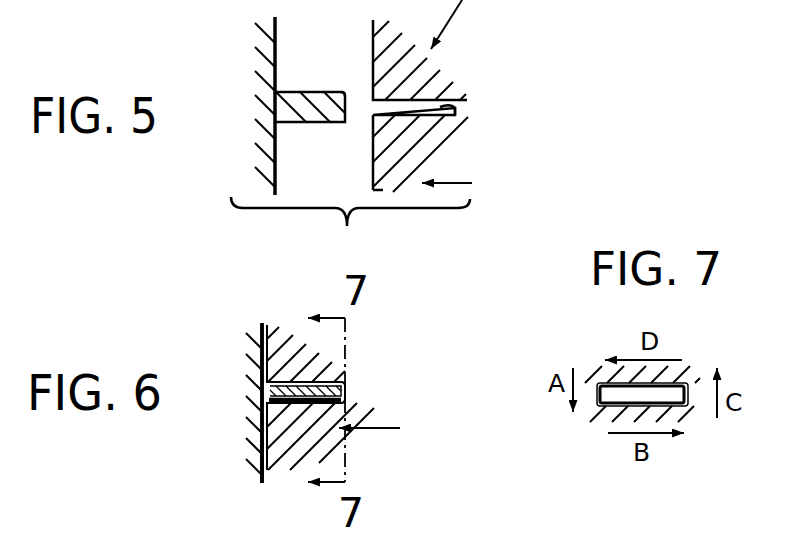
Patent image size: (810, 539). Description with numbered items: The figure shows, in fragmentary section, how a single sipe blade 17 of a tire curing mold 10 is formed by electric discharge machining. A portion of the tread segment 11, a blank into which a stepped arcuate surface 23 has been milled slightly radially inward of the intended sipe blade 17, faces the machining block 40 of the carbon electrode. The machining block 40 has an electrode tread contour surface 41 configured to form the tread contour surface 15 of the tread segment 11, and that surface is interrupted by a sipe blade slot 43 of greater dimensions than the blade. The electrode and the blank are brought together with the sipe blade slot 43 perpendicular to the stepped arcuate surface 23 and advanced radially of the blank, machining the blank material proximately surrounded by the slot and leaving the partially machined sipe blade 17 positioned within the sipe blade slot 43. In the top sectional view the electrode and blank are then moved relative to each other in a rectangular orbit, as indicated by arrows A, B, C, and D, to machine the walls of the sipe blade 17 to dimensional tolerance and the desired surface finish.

In FIG. 5, the tire curing mold 10 is at (258, 148).
In FIG. 6, the tire curing mold 10 is at (250, 445).
In FIG. 5, the tread segment 11 is at (262, 43).
In FIG. 6, the tread segment 11 is at (257, 360).
In FIG. 6, the tread contour surface 15 is at (266, 345).
In FIG. 5, the sipe blade 17 is at (310, 113).
In FIG. 6, the sipe blade 17 is at (336, 393).
In FIG. 7, the sipe blade 17 is at (606, 386).
In FIG. 5, the stepped arcuate surface 23 is at (347, 90).
In FIG. 5, the machining block 40 is at (434, 149).
In FIG. 6, the machining block 40 is at (330, 368).
In FIG. 7, the machining block 40 is at (684, 373).
In FIG. 6, the electrode tread contour surface 41 is at (259, 462).
In FIG. 5, the sipe blade slot 43 is at (440, 107).
In FIG. 6, the sipe blade slot 43 is at (264, 394).
In FIG. 7, the sipe blade slot 43 is at (684, 403).